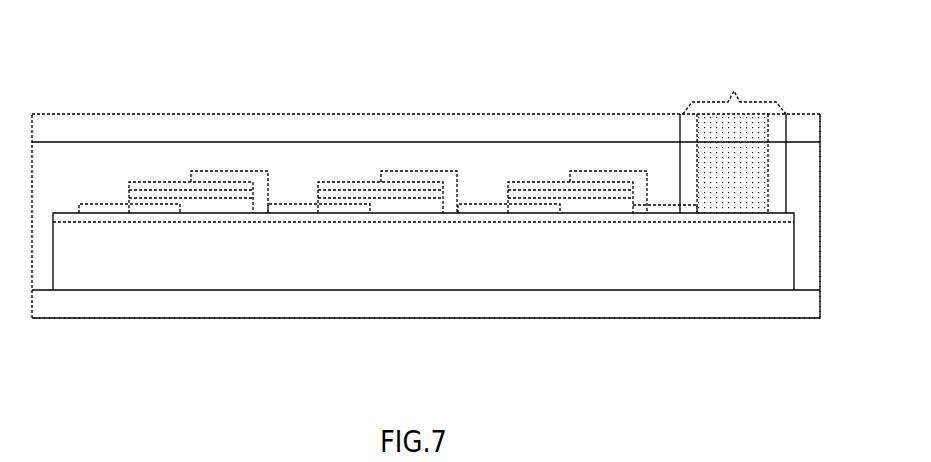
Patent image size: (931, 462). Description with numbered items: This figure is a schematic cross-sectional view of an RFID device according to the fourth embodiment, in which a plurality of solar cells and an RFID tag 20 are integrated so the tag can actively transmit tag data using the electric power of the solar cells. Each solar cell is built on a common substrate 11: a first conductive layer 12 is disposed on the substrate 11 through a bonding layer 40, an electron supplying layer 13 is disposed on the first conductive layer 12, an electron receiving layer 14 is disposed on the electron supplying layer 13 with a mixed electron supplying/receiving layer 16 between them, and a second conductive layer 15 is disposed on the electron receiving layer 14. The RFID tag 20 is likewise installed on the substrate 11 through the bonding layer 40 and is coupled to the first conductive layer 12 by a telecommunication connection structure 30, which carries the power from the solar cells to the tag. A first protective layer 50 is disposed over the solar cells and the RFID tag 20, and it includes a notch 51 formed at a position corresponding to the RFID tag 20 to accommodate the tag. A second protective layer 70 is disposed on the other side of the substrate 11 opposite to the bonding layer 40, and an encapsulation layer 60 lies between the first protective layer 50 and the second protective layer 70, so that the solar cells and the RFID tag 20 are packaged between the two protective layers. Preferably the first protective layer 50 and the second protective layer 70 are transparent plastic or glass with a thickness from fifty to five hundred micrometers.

The substrate 11 is at (423, 251).
The first conductive layer 12 is at (485, 208).
The electron supplying layer 13 is at (627, 208).
The electron receiving layer 14 is at (548, 183).
The second conductive layer 15 is at (643, 183).
The mixed electron supplying/receiving layer 16 is at (597, 202).
The RFID tag 20 is at (757, 140).
The telecommunication connection structure 30 is at (667, 207).
The bonding layer 40 is at (70, 213).
The first protective layer 50 is at (338, 135).
The notch 51 is at (734, 91).
The encapsulation layer 60 is at (786, 175).
The second protective layer 70 is at (137, 302).